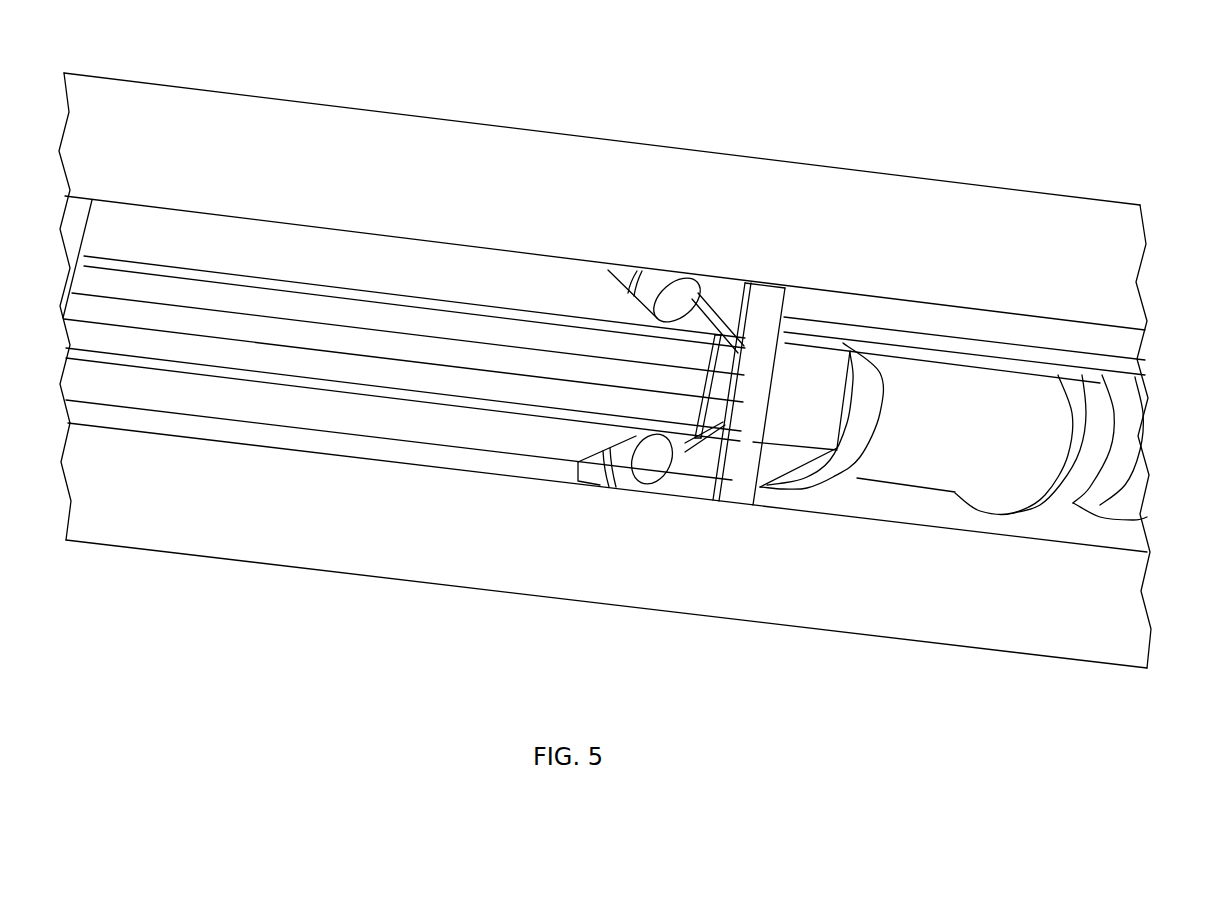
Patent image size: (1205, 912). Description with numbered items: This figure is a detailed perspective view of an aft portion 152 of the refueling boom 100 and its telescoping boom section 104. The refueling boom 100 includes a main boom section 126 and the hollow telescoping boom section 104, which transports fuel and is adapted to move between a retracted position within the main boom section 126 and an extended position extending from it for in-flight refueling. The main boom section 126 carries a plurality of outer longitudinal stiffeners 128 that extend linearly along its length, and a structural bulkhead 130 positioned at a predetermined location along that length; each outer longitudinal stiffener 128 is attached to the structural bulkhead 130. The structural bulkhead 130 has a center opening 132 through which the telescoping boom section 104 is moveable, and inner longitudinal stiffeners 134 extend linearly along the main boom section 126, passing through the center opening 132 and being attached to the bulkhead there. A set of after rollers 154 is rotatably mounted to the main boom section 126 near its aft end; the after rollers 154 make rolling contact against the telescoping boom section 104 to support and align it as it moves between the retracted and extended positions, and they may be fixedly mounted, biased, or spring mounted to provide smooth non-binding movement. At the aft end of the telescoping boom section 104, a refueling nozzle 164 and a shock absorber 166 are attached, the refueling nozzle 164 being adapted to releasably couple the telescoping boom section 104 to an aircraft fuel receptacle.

The refueling boom 100 is at (806, 91).
The telescoping boom section 104 is at (220, 230).
The main boom section 126 is at (538, 130).
The outer longitudinal stiffeners 128 is at (652, 142).
The structural bulkhead 130 is at (696, 490).
The center opening 132 is at (707, 350).
The inner longitudinal stiffeners 134 is at (341, 306).
The aft portion 152 is at (942, 158).
The after rollers 154 is at (655, 276).
The refueling nozzle 164 is at (1148, 521).
The shock absorber 166 is at (1033, 515).